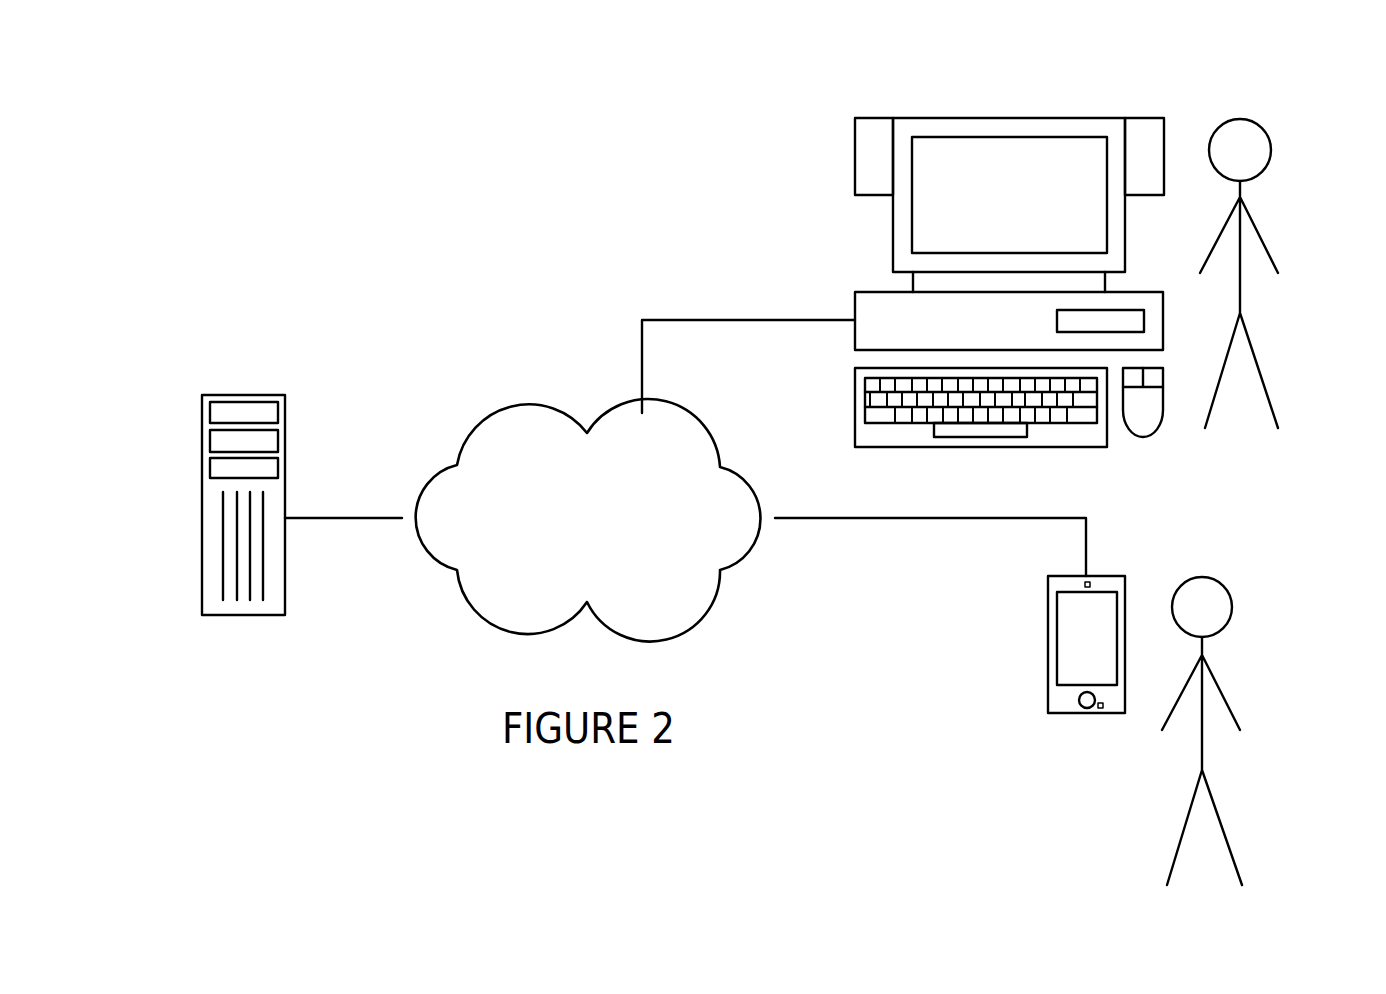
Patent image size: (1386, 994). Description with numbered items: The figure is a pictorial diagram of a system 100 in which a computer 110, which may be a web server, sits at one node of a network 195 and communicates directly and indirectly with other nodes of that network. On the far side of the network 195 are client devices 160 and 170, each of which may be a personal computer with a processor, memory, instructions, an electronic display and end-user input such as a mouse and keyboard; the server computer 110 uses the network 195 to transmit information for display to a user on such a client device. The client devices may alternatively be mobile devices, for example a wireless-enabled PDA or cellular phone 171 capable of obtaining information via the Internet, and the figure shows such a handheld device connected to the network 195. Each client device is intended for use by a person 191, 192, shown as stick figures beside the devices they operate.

The system 100 is at (306, 83).
The computer 110 is at (202, 410).
The client device 160 is at (1027, 137).
The client device 170 is at (842, 232).
The mobile device 171 is at (1048, 600).
The person 191 is at (1267, 213).
The person 192 is at (1230, 653).
The network 195 is at (533, 410).